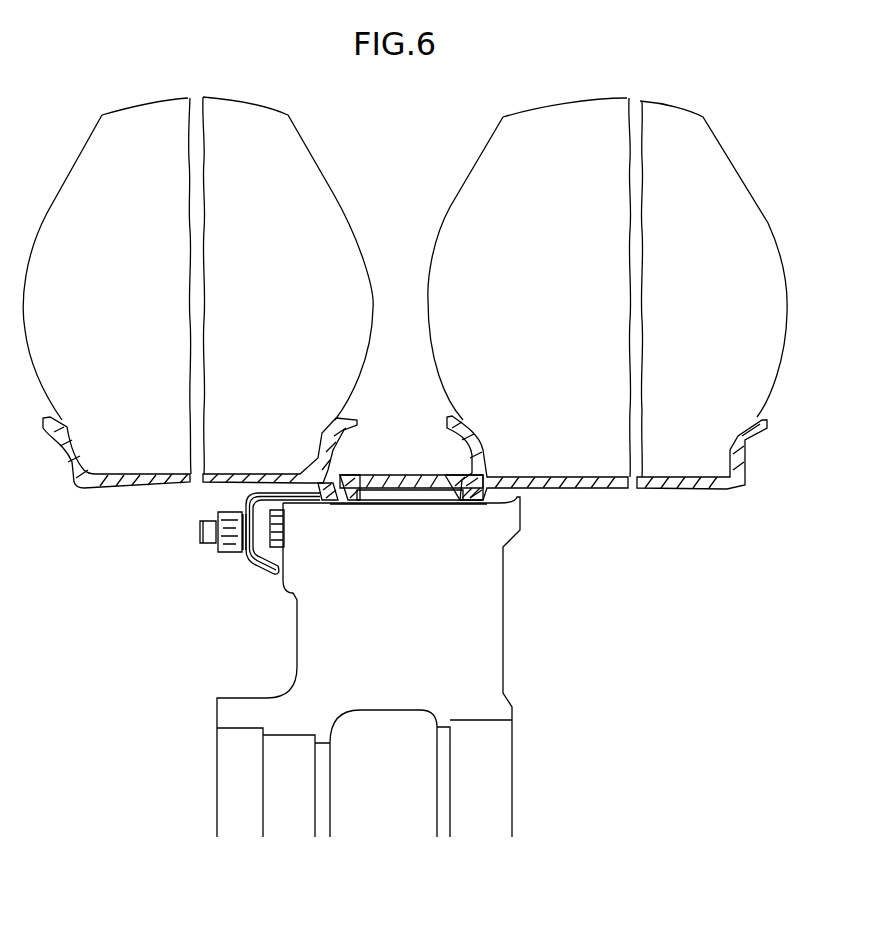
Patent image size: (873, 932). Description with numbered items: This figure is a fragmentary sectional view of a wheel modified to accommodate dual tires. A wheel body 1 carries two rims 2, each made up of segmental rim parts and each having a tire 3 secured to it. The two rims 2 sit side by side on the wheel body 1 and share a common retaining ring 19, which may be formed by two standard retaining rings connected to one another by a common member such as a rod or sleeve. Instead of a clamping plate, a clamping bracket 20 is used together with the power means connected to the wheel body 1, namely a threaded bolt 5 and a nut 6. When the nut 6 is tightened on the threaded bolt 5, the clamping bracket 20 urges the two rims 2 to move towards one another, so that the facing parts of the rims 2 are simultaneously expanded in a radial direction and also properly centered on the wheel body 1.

The wheel body 1 is at (493, 655).
The rim 2 is at (93, 487).
The tire 3 is at (336, 210).
The threaded bolt 5 is at (209, 532).
The nut 6 is at (228, 538).
The common retaining ring 19 is at (384, 482).
The clamping bracket 20 is at (262, 560).